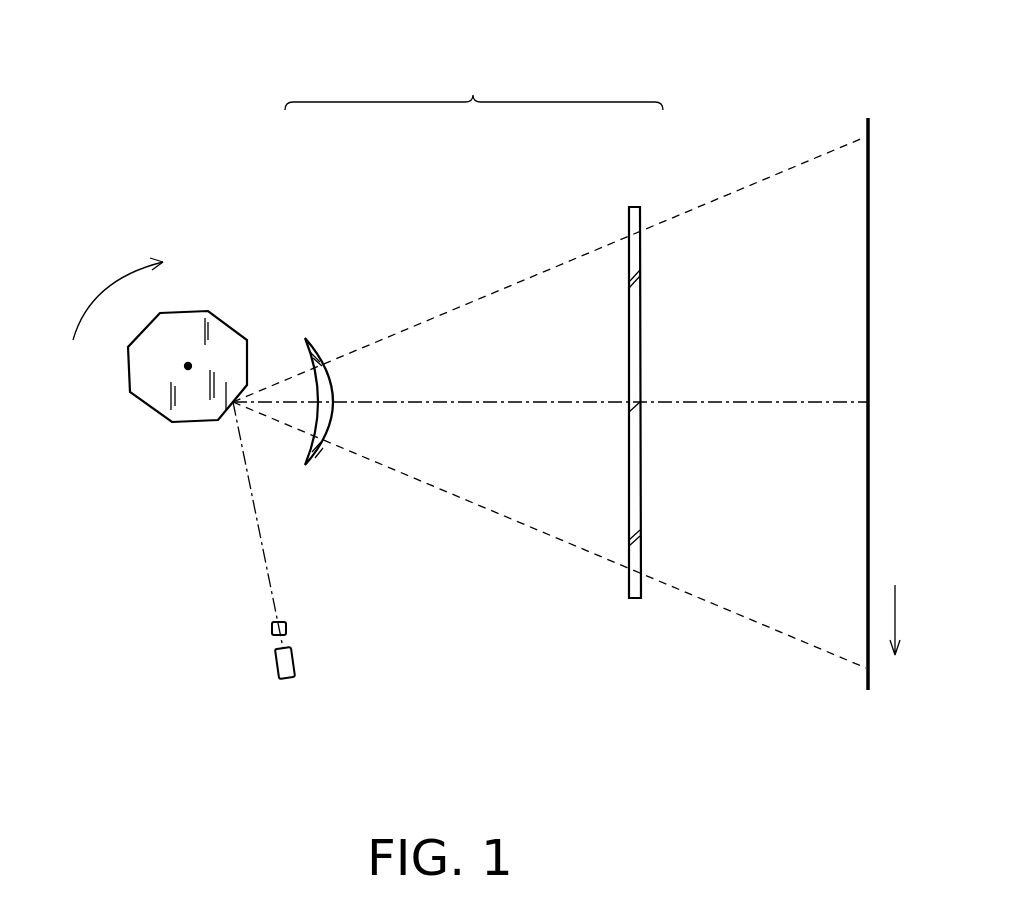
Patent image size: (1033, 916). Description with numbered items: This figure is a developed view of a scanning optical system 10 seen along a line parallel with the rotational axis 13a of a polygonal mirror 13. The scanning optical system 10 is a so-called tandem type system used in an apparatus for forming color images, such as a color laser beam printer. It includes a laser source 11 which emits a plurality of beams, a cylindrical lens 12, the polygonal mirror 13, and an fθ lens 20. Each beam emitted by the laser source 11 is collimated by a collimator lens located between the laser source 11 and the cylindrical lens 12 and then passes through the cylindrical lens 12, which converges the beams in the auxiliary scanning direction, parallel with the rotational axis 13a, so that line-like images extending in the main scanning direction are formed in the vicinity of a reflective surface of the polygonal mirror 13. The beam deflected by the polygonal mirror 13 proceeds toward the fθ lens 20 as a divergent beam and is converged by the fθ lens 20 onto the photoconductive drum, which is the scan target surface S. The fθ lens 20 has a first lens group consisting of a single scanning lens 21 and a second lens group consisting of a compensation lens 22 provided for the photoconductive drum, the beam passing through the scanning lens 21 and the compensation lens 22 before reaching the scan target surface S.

The scanning optical system 10 is at (108, 182).
The laser source 11 is at (275, 663).
The cylindrical lens 12 is at (272, 628).
The polygonal mirror 13 is at (163, 408).
The rotational axis 13a is at (190, 362).
The fθ lens 20 is at (474, 87).
The scanning lens 21 is at (314, 345).
The compensation lens 22 is at (633, 206).
The scan target surface S is at (866, 130).